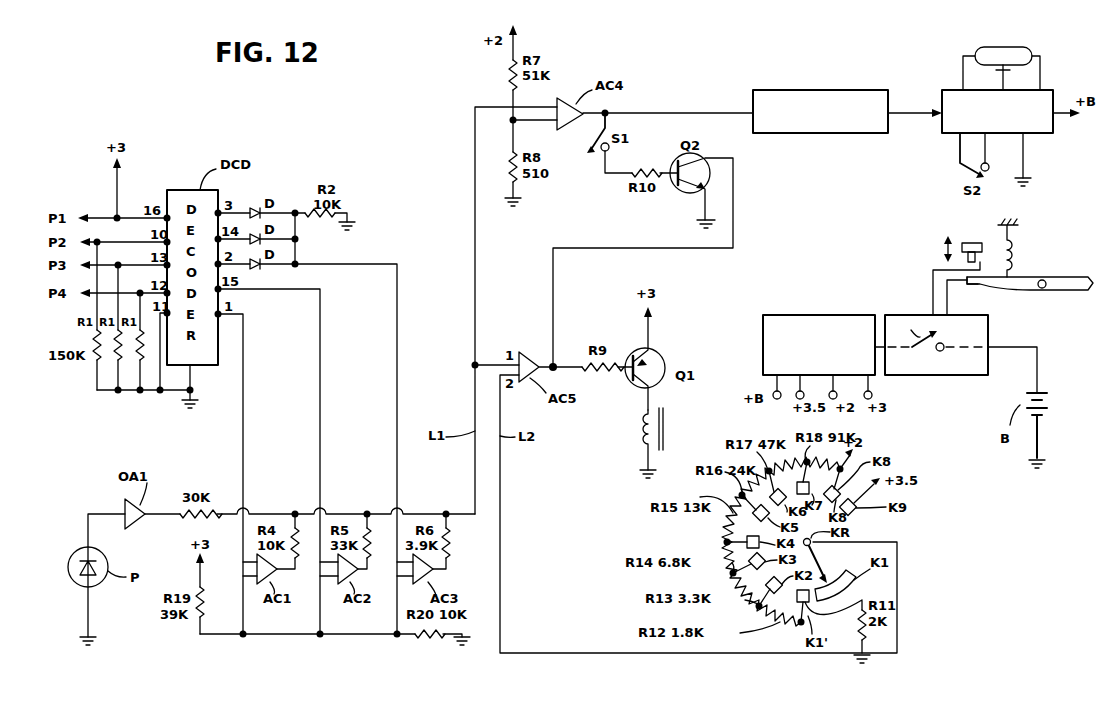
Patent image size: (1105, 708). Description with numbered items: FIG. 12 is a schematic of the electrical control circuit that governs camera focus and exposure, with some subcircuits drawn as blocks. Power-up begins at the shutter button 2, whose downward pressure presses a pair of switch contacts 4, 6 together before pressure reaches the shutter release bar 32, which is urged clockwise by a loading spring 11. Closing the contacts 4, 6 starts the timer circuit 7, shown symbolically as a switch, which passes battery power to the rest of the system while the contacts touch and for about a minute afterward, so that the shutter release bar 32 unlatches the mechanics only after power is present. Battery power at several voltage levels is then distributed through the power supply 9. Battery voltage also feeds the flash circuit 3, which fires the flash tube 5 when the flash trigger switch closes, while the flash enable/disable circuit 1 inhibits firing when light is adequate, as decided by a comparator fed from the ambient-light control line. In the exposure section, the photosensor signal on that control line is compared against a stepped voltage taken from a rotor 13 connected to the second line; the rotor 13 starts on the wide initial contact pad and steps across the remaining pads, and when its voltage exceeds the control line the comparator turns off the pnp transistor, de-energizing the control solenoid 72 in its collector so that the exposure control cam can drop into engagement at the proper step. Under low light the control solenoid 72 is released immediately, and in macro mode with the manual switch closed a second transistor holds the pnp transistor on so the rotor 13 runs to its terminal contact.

The flash enable/disable circuit 1 is at (800, 90).
The shutter button 2 is at (970, 243).
The flash circuit 3 is at (955, 92).
The switch contact 4 is at (978, 248).
The flash tube 5 is at (1003, 47).
The switch contact 6 is at (982, 290).
The timer circuit 7 is at (950, 375).
The power supply 9 is at (840, 315).
The loading spring 11 is at (1015, 256).
The rotor 13 is at (820, 563).
The shutter release bar 32 is at (1037, 277).
The control solenoid 72 is at (641, 439).